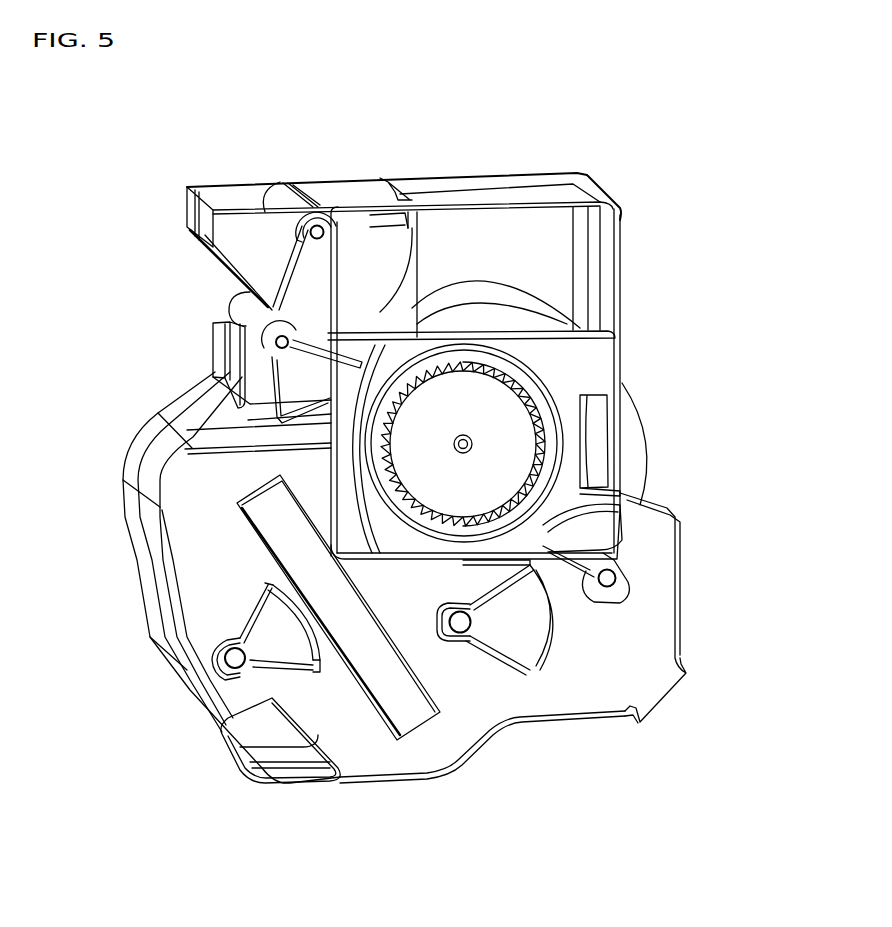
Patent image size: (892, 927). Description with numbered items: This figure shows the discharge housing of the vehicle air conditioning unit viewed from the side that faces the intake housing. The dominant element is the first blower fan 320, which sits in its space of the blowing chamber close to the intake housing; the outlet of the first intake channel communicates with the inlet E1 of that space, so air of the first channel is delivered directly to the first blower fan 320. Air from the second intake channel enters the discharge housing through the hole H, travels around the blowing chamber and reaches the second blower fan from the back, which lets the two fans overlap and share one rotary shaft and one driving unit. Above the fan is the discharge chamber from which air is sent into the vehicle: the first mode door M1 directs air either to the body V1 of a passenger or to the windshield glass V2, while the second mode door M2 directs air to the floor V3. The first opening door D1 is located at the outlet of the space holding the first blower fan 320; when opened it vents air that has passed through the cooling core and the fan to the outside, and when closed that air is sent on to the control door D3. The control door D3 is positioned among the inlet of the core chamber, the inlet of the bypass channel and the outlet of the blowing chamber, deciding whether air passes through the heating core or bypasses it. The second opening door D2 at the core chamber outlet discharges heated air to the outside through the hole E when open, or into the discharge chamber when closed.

The body of a passenger V1 is at (244, 195).
The windshield glass V2 is at (364, 193).
The floor V3 is at (295, 757).
The first mode door M1 is at (317, 224).
The second mode door M2 is at (262, 347).
The hole H is at (556, 257).
The inlet of the space in which the first blower fan is disposed E1 is at (497, 404).
The first blower fan 320 is at (543, 437).
The first opening door D1 is at (616, 578).
The second opening door D2 is at (235, 658).
The control door D3 is at (466, 640).
The hole E is at (667, 698).